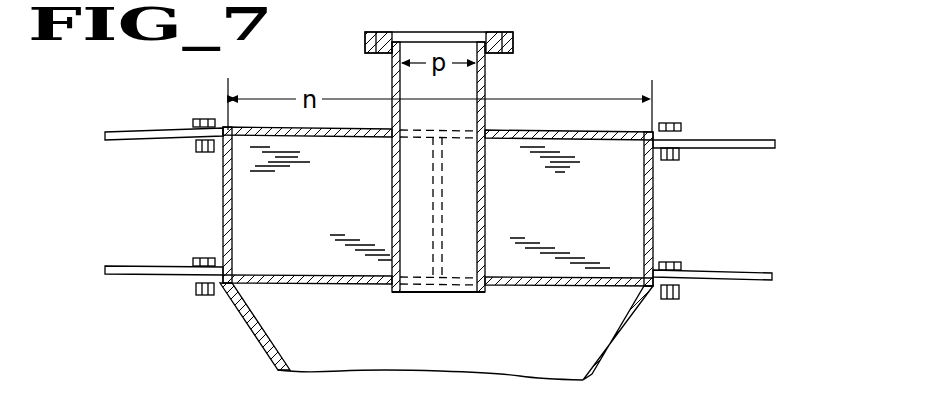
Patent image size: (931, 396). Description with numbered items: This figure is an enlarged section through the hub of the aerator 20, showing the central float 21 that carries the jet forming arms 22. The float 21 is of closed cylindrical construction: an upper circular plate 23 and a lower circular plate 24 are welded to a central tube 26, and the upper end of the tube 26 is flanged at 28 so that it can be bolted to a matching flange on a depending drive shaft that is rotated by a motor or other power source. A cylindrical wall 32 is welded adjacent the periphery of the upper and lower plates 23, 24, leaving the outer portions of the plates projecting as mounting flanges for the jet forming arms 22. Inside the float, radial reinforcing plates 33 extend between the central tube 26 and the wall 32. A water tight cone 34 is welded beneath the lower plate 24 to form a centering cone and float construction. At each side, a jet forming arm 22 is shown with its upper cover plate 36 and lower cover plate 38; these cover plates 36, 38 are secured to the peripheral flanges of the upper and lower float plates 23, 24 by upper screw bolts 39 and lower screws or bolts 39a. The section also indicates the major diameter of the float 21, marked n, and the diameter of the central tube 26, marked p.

The aerator 20 is at (623, 66).
The central float 21 is at (223, 203).
The jet forming arms 22 is at (105, 129).
The upper circular plate 23 is at (503, 133).
The lower circular plate 24 is at (336, 285).
The central tube 26 is at (488, 82).
The flange 28 is at (512, 35).
The cylindrical wall 32 is at (655, 200).
The radial reinforcing plates 33 is at (325, 222).
The water tight cone 34 is at (262, 339).
The upper cover plate 36 is at (118, 130).
The lower cover plate 38 is at (790, 278).
The upper screw bolts 39 is at (200, 121).
The lower screws or bolts 39a is at (200, 296).